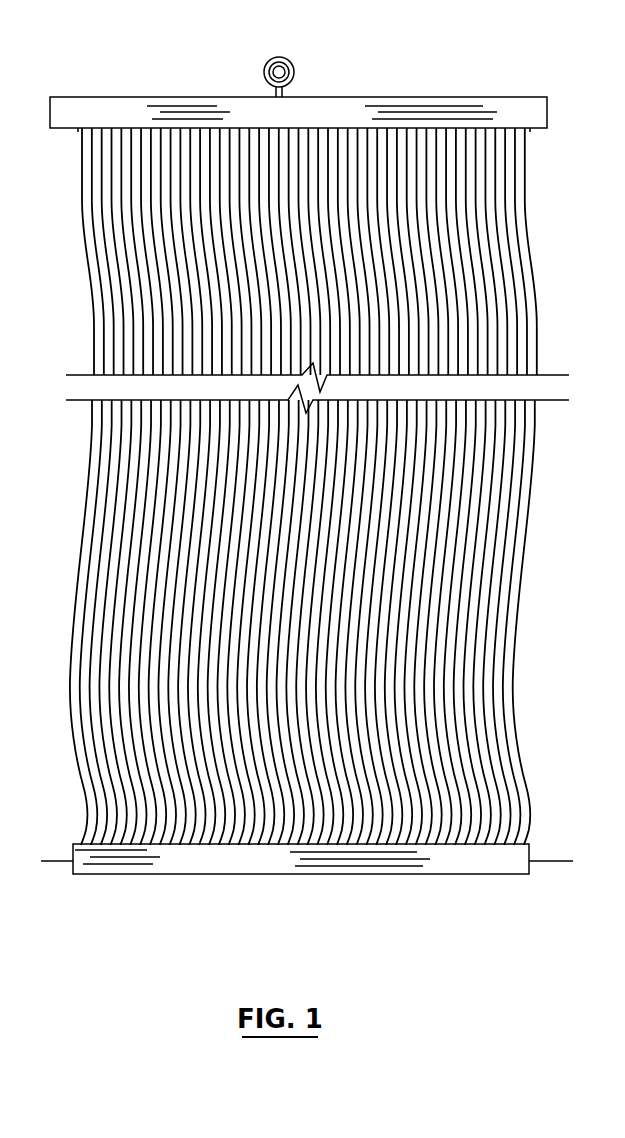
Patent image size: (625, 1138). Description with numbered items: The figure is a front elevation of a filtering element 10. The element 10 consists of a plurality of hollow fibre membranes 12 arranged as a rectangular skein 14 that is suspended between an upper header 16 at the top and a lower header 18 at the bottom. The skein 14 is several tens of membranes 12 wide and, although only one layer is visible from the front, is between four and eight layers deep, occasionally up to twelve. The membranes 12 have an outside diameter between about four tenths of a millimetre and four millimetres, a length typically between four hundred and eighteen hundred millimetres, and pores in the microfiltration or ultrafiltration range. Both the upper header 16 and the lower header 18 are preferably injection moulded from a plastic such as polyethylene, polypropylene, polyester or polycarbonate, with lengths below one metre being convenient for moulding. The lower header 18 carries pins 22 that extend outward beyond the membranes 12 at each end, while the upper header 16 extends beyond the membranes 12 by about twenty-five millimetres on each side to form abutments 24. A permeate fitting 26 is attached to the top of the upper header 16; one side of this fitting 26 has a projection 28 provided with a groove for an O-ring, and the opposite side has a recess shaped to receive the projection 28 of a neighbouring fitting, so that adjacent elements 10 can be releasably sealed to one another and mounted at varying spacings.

The filtering element 10 is at (295, 911).
The hollow fibre membranes 12 is at (517, 612).
The rectangular skein 14 is at (540, 490).
The upper header 16 is at (548, 112).
The lower header 18 is at (532, 852).
The pins 22 is at (60, 862).
The abutments 24 is at (66, 128).
The permeate fitting 26 is at (284, 57).
The projection 28 is at (294, 70).